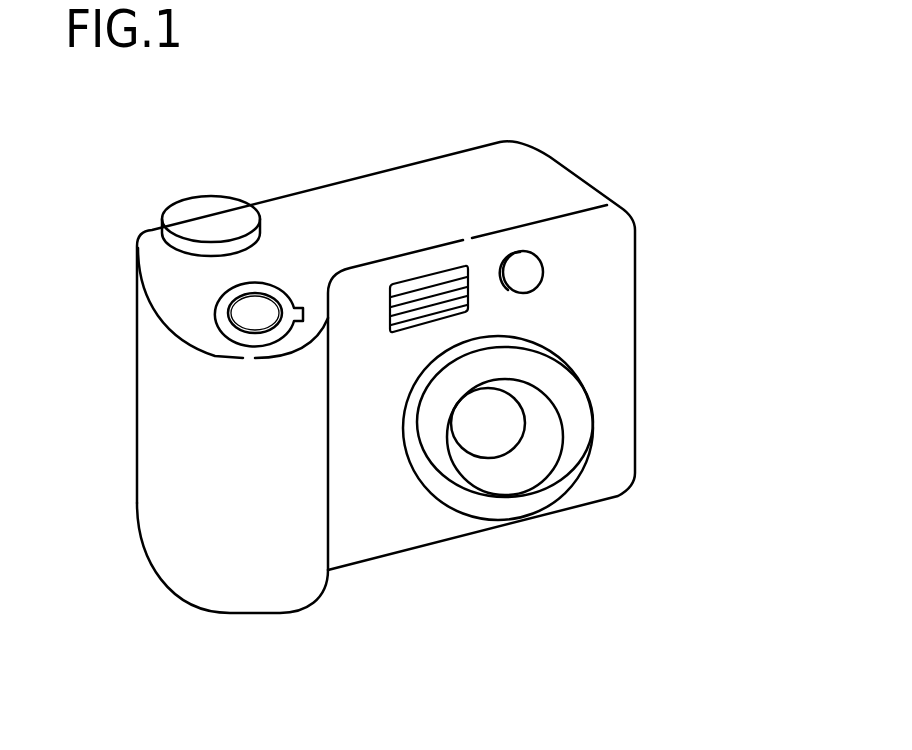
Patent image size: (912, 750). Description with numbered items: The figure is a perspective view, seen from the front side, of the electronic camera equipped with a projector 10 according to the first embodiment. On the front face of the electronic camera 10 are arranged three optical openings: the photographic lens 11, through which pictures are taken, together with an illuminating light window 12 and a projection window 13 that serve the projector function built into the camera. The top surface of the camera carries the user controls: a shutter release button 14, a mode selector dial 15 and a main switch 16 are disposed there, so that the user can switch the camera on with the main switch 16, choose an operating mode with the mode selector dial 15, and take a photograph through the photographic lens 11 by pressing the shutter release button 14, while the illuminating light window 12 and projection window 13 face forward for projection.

The electronic camera equipped with a projector 10 is at (688, 327).
The photographic lens 11 is at (503, 433).
The illuminating light window 12 is at (413, 287).
The projection window 13 is at (520, 263).
The shutter release button 14 is at (238, 312).
The mode selector dial 15 is at (193, 208).
The main switch 16 is at (268, 282).